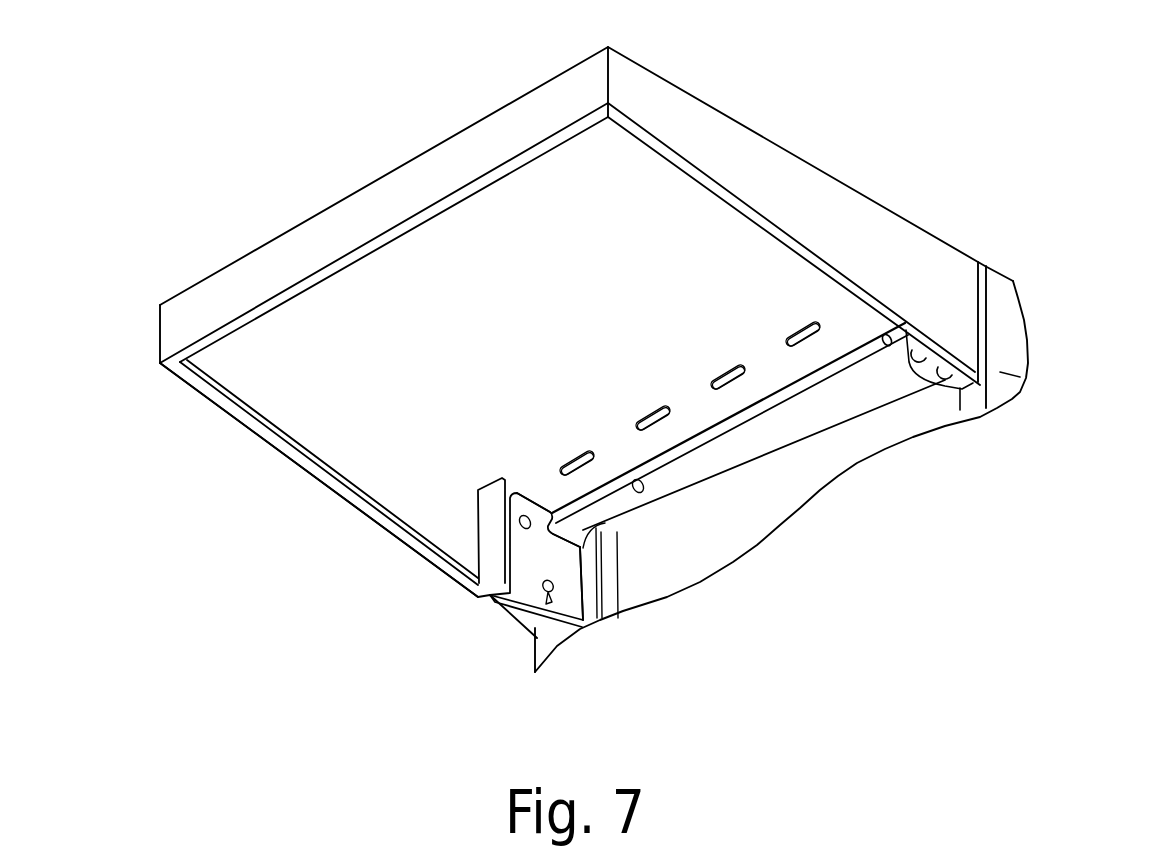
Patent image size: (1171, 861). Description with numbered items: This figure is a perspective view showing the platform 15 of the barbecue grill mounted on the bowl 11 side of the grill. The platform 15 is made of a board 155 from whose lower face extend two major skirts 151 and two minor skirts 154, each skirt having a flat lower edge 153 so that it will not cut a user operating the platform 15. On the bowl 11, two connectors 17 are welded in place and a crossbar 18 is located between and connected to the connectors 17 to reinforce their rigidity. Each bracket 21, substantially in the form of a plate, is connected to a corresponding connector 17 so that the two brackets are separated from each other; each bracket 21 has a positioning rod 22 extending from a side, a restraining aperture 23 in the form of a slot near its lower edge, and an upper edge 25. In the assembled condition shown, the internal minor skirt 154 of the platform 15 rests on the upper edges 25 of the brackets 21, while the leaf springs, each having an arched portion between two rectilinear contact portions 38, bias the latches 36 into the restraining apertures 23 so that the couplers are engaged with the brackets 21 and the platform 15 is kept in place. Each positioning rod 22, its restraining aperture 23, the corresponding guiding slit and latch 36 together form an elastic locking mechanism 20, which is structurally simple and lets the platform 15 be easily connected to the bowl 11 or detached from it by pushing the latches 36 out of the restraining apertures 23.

The platform 15 is at (266, 239).
The board 155 is at (551, 214).
The minor skirt 154 is at (817, 360).
The lower edge 153 is at (205, 395).
The major skirt 151 is at (327, 432).
The crossbar 18 is at (863, 362).
The connector 17 is at (1007, 373).
The bowl 11 is at (867, 427).
The elastic locking mechanism 20 is at (472, 535).
The bracket 21 is at (605, 575).
The positioning rod 22 is at (525, 528).
The restraining aperture 23 is at (545, 597).
The upper edge 25 is at (613, 527).
The latch 36 is at (575, 578).
The contact portion 38 is at (529, 612).